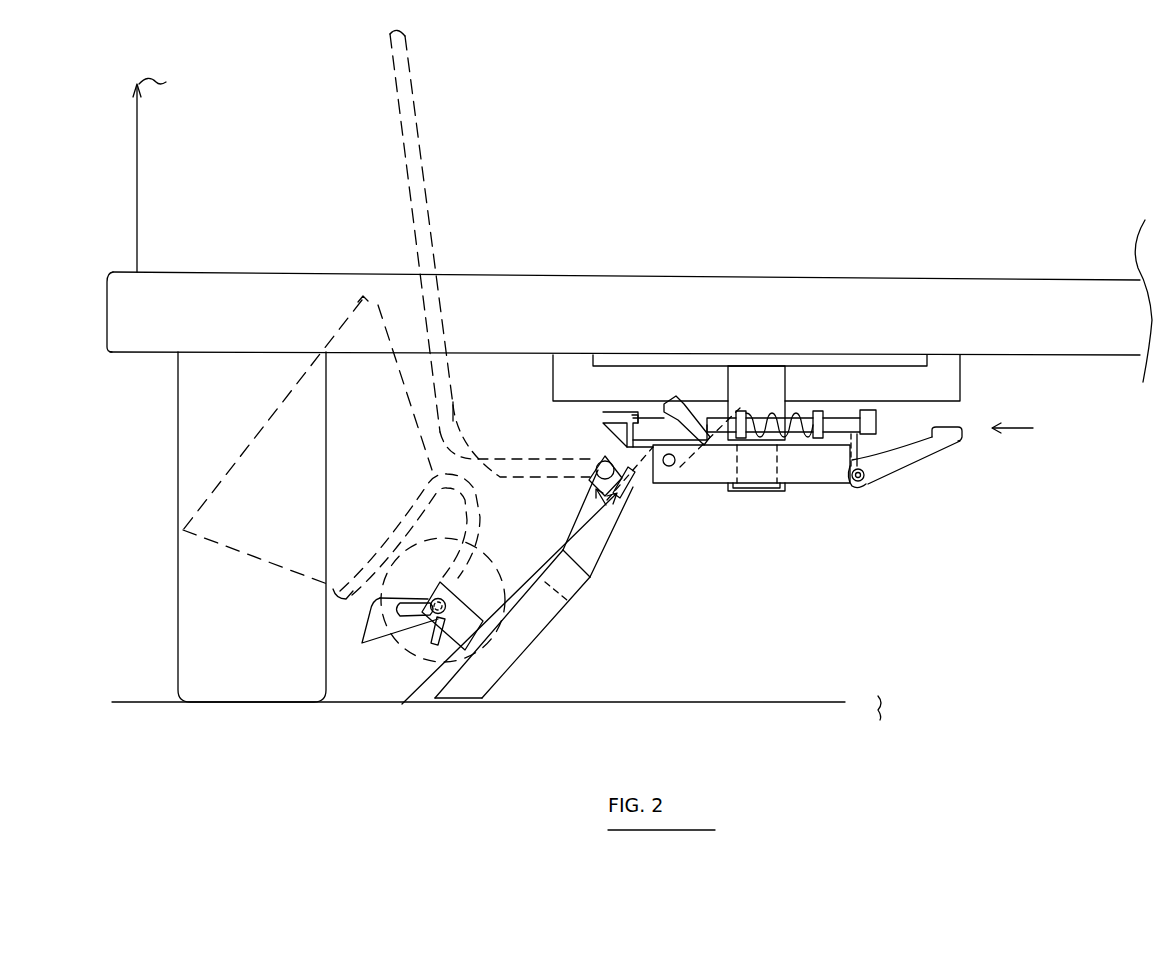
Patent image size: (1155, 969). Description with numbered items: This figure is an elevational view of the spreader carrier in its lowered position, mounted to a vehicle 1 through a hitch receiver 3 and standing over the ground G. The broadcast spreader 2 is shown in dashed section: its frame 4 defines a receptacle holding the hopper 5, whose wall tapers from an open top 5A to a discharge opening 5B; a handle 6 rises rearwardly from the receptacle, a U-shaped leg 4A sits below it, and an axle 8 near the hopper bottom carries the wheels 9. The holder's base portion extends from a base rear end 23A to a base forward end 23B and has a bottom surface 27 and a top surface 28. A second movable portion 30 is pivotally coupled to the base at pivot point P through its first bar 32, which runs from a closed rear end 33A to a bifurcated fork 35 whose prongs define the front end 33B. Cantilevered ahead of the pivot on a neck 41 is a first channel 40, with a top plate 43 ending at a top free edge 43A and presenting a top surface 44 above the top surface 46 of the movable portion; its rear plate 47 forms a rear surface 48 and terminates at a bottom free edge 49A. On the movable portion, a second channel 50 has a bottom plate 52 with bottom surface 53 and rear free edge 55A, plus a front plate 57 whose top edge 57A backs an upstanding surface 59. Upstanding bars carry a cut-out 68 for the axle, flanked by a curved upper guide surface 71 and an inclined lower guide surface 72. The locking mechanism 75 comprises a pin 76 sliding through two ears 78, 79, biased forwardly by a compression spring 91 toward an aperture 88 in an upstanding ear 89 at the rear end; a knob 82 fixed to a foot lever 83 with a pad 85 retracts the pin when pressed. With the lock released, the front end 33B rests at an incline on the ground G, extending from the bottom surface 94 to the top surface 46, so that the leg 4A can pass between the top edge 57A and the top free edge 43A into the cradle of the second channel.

The vehicle 1 is at (135, 236).
The spreader 2 is at (258, 567).
The hitch receiver 3 is at (963, 380).
The frame 4 is at (479, 486).
The leg 4A is at (487, 458).
The hopper 5 is at (370, 313).
The open top 5A is at (243, 448).
The opening 5B is at (355, 588).
The handle 6 is at (414, 68).
The axle 8 is at (390, 622).
The wheels 9 is at (398, 645).
The base rear end 23A is at (866, 480).
The base forward end 23B is at (656, 477).
The bottom surface 27 is at (713, 483).
The top surface 28 is at (834, 440).
The second movable portion 30 is at (723, 700).
The first bar 32 is at (590, 568).
The rear end 33A is at (717, 414).
The front end 33B is at (457, 702).
The bifurcated fork 35 is at (545, 625).
The first channel 40 is at (640, 410).
The neck 41 is at (672, 400).
The top plate 43 is at (612, 410).
The top free edge 43A is at (604, 412).
The top surface 44 is at (603, 421).
The top surface 46 is at (568, 548).
The rear plate 47 is at (662, 398).
The rear surface 48 is at (600, 432).
The bottom free edge 49A is at (690, 483).
The second channel 50 is at (608, 486).
The bottom plate 52 is at (618, 493).
The bottom surface 53 is at (590, 452).
The rear free edge 55A is at (644, 485).
The front plate 57 is at (625, 500).
The top edge 57A is at (509, 596).
The upstanding surface 59 is at (603, 458).
The cut-out 68 is at (426, 607).
The upper guide surface 71 is at (378, 610).
The lower guide surface 72 is at (442, 642).
The locking mechanism 75 is at (1028, 424).
The pin 76 is at (838, 442).
The ear 78 is at (739, 417).
The ear 79 is at (818, 412).
The knob 82 is at (876, 413).
The foot lever 83 is at (943, 466).
The pad 85 is at (963, 433).
The aperture 88 is at (680, 398).
The upstanding ear 89 is at (685, 392).
The compression spring 91 is at (768, 416).
The bottom surface 94 is at (505, 668).
The ground G is at (843, 695).
The pivot point P is at (674, 464).